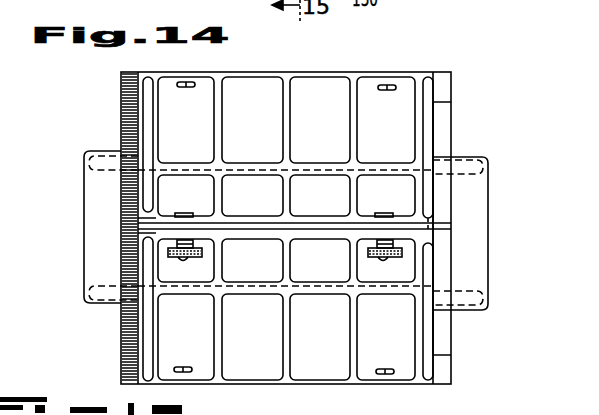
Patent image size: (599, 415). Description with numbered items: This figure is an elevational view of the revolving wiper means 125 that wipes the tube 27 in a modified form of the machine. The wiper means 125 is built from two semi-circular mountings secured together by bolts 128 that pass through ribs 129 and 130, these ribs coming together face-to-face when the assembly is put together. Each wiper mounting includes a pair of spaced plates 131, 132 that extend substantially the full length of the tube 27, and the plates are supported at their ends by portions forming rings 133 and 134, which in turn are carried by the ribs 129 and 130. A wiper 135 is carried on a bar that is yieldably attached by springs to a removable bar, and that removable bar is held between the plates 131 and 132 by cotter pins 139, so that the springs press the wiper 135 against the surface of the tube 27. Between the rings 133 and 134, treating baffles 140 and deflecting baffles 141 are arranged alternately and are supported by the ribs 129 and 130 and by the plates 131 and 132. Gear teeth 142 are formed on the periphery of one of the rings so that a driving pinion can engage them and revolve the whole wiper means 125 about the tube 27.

The tube 27 is at (84, 212).
The wiper means 125 is at (300, 237).
The bolts 128 is at (181, 213).
The rib 129 is at (242, 237).
The rib 130 is at (264, 218).
The plate 131 is at (267, 90).
The plate 132 is at (305, 380).
The ring 133 is at (121, 128).
The ring 134 is at (448, 136).
The wiper 135 is at (305, 170).
The cotter pins 139 is at (194, 84).
The treating baffles 140 is at (156, 132).
The deflecting baffles 141 is at (222, 135).
The gear teeth 142 is at (121, 106).